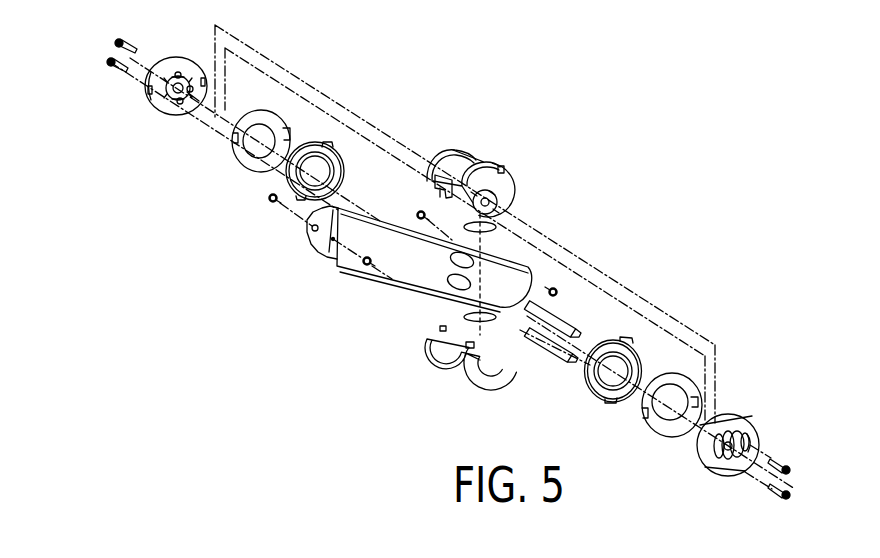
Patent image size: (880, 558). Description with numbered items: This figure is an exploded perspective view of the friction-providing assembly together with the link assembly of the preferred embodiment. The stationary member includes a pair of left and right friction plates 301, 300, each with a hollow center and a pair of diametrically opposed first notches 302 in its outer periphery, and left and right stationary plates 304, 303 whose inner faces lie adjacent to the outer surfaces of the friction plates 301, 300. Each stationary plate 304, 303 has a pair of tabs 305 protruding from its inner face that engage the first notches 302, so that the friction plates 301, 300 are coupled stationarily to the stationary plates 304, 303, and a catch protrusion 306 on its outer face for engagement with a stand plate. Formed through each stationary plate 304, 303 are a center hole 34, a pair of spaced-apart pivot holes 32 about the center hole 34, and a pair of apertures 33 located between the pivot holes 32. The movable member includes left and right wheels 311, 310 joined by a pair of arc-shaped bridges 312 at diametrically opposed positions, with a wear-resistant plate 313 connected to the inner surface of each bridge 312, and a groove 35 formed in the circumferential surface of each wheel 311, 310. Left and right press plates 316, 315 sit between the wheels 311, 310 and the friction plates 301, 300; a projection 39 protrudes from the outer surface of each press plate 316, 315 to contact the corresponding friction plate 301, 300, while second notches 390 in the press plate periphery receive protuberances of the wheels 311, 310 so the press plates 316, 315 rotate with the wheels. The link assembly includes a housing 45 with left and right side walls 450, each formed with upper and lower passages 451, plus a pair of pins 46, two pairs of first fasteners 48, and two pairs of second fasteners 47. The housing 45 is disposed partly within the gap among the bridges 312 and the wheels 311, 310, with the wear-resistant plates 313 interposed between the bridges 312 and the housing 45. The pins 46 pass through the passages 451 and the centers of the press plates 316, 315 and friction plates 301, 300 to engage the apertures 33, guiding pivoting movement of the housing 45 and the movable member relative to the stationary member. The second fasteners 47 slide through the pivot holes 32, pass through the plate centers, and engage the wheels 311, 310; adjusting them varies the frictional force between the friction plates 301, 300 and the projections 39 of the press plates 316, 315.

The pivot holes 32 is at (170, 98).
The apertures 33 is at (176, 78).
The center hole 34 is at (181, 102).
The groove 35 is at (504, 255).
The projection 39 is at (712, 371).
The housing 45 is at (415, 298).
The pins 46 is at (549, 350).
The second fasteners 47 is at (108, 59).
The first fasteners 48 is at (418, 208).
The right friction plate 300 is at (700, 348).
The left friction plate 301 is at (272, 110).
The first notches 302 is at (698, 403).
The right stationary plate 303 is at (748, 420).
The left stationary plate 304 is at (186, 57).
The tabs 305 is at (148, 96).
The catch protrusion 306 is at (758, 442).
The right wheel 310 is at (515, 182).
The left wheel 311 is at (462, 150).
The bridges 312 is at (478, 165).
The wear-resistant plate 313 is at (452, 290).
The right press plate 315 is at (633, 355).
The left press plate 316 is at (334, 149).
The second notches 390 is at (652, 330).
The side walls 450 is at (372, 274).
The passages 451 is at (452, 288).